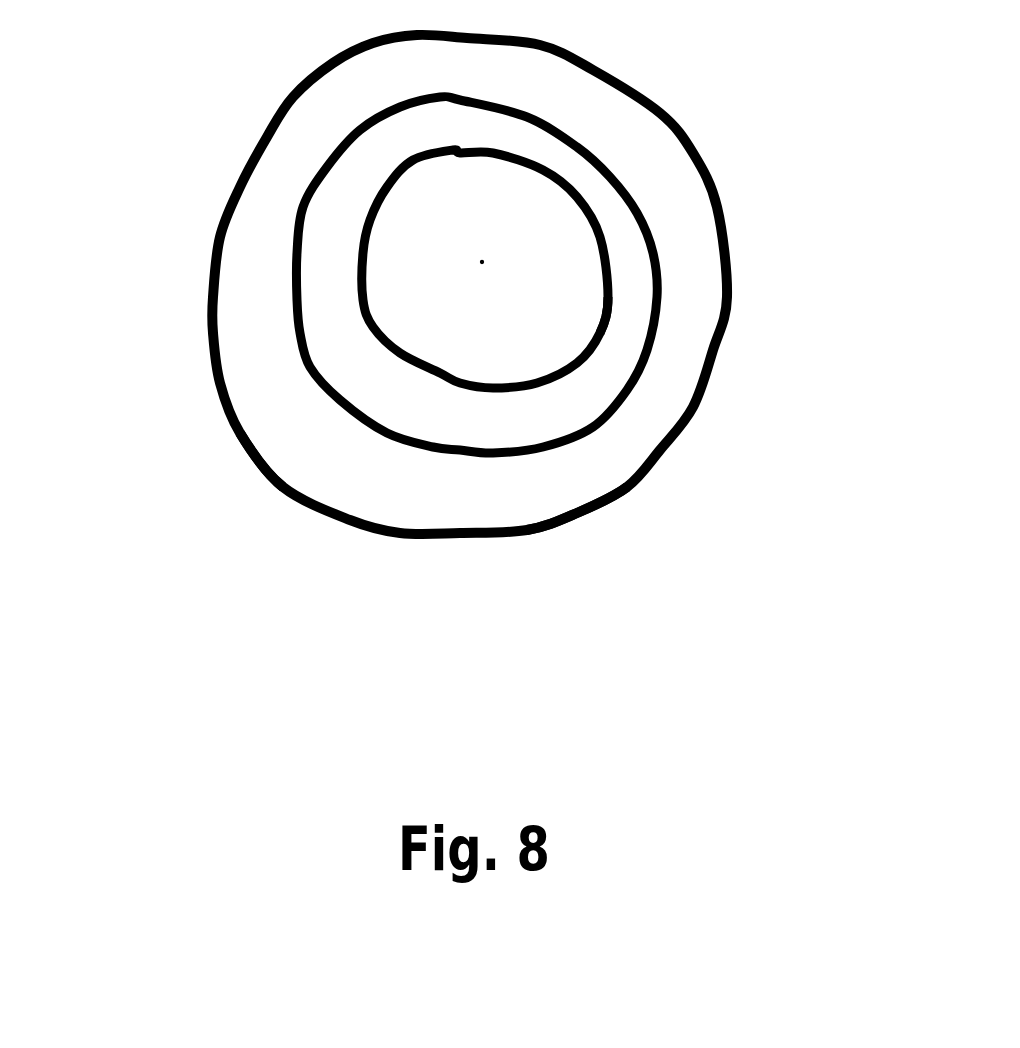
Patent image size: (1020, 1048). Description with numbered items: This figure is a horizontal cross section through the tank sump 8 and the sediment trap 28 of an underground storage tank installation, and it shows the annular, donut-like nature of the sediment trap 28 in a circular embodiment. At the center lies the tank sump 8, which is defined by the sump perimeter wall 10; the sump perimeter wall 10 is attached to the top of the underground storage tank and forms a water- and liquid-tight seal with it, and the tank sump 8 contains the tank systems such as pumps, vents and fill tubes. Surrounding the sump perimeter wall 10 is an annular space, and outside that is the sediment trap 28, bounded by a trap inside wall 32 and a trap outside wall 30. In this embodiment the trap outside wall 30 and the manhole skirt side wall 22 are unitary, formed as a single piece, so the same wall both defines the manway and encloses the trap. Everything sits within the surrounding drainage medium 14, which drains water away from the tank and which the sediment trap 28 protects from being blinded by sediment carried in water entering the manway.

The tank sump 8 is at (482, 262).
The sump perimeter wall 10 is at (605, 245).
The drainage medium 14 is at (618, 318).
The manhole skirt side wall 22 is at (645, 470).
The sediment trap 28 is at (312, 447).
The trap outside wall 30 is at (665, 452).
The trap inside wall 32 is at (548, 447).